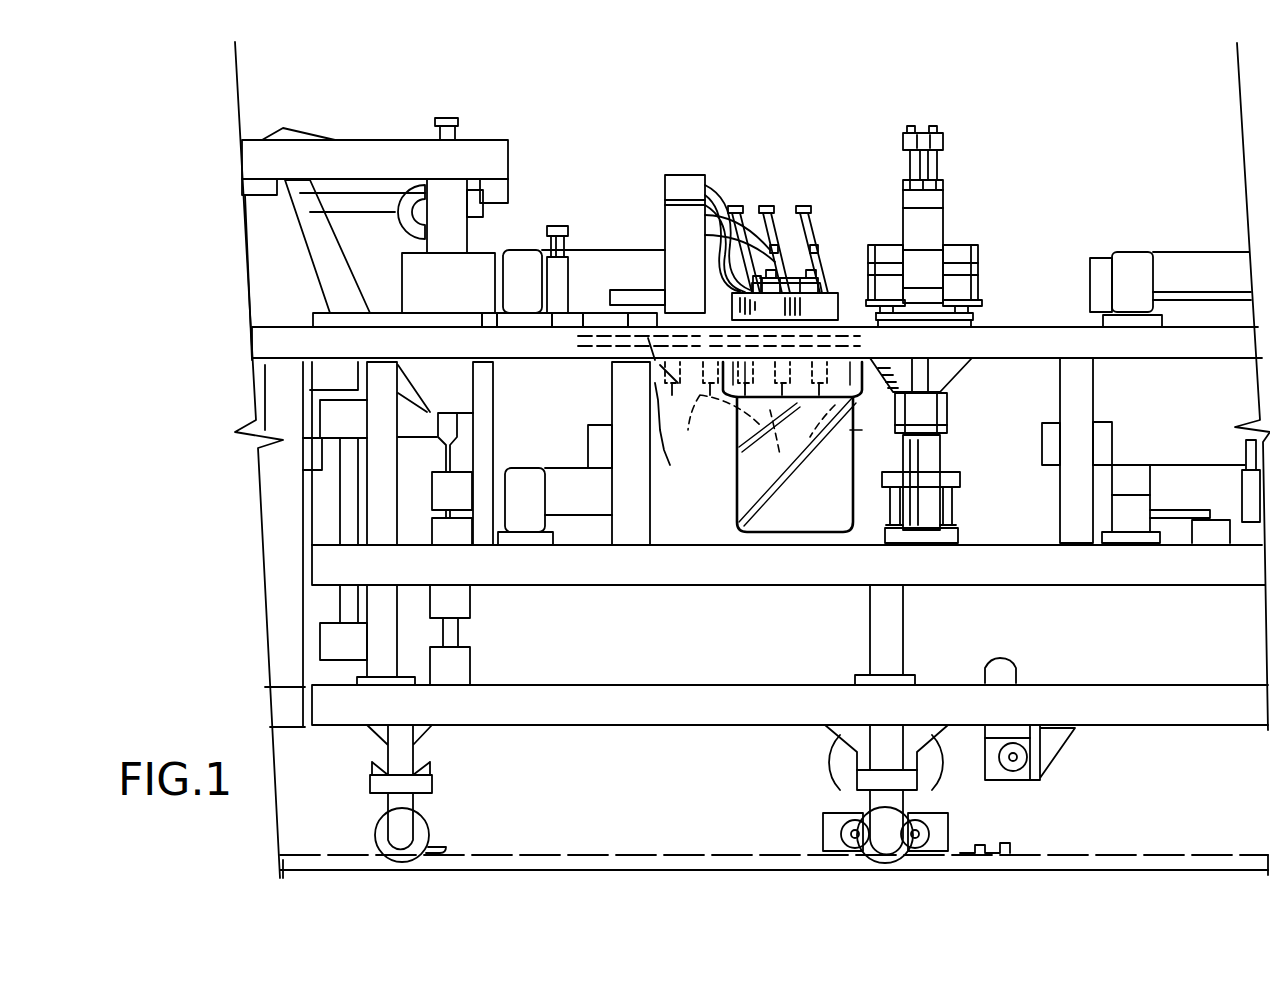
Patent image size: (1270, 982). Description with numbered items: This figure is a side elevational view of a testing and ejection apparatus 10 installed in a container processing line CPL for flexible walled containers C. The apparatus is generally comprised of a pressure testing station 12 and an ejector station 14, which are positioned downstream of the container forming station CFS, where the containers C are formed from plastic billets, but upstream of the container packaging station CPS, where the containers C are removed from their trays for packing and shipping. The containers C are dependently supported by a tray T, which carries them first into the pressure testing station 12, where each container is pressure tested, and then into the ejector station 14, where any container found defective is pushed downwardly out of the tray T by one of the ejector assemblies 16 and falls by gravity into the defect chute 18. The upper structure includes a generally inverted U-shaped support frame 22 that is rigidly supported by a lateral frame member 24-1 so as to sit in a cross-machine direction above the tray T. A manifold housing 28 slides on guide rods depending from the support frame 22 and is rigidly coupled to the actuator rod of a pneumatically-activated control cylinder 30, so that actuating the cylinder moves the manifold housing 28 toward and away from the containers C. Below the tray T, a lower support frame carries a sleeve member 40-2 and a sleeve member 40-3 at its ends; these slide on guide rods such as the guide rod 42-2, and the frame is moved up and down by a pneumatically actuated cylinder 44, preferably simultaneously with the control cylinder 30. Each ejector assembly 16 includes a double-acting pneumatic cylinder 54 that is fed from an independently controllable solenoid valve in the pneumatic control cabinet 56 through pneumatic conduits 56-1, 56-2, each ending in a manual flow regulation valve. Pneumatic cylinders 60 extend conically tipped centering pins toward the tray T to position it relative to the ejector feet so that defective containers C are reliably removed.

The processing station 10 is at (1015, 87).
The pressure testing station 12 is at (957, 218).
The ejector station 14 is at (802, 215).
The ejector assemblies 16 is at (803, 198).
The defect chute 18 is at (838, 519).
The support frame 22 is at (925, 223).
The lateral frame member 24-1 is at (1068, 352).
The manifold housing 28 is at (980, 265).
The control cylinder 30 is at (940, 162).
The sleeve member 40-2 is at (940, 430).
The sleeve member 40-3 is at (968, 358).
The guide rod 42-2 is at (950, 395).
The pneumatically actuated cylinder 44 is at (955, 510).
The double-acting pneumatic cylinder 54 is at (815, 252).
The pneumatic control cabinet 56 is at (682, 178).
The pneumatic conduit 56-1 is at (725, 195).
The pneumatic conduit 56-2 is at (700, 222).
The pneumatic cylinders 60 is at (818, 287).
The tray T is at (655, 365).
The flexible walled container C is at (778, 440).
The container packaging station CPS is at (562, 178).
The container processing line CPL is at (1080, 132).
The container forming station CFS is at (1222, 188).